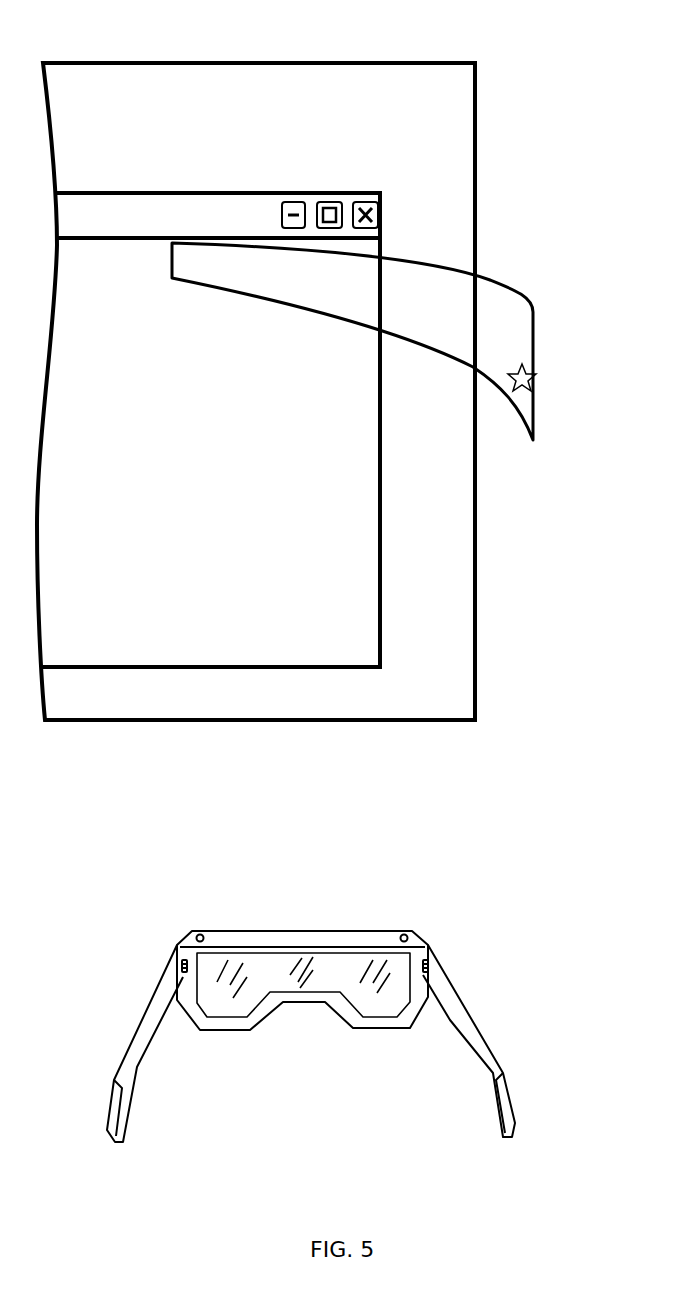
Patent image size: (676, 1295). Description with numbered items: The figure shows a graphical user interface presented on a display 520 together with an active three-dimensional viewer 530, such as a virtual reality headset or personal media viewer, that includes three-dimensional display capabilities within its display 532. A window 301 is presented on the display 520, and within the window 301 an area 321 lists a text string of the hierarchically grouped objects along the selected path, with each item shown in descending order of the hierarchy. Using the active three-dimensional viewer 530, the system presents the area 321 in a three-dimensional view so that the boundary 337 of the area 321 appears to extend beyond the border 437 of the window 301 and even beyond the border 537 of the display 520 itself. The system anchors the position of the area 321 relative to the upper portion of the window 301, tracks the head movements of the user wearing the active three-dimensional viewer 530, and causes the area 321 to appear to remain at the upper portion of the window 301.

The display 520 is at (352, 63).
The window 301 is at (110, 193).
The area 321 is at (250, 288).
The boundary 337 is at (537, 317).
The border 437 is at (382, 517).
The border 537 is at (475, 537).
The display 532 is at (348, 942).
The active 3D viewer 530 is at (450, 970).